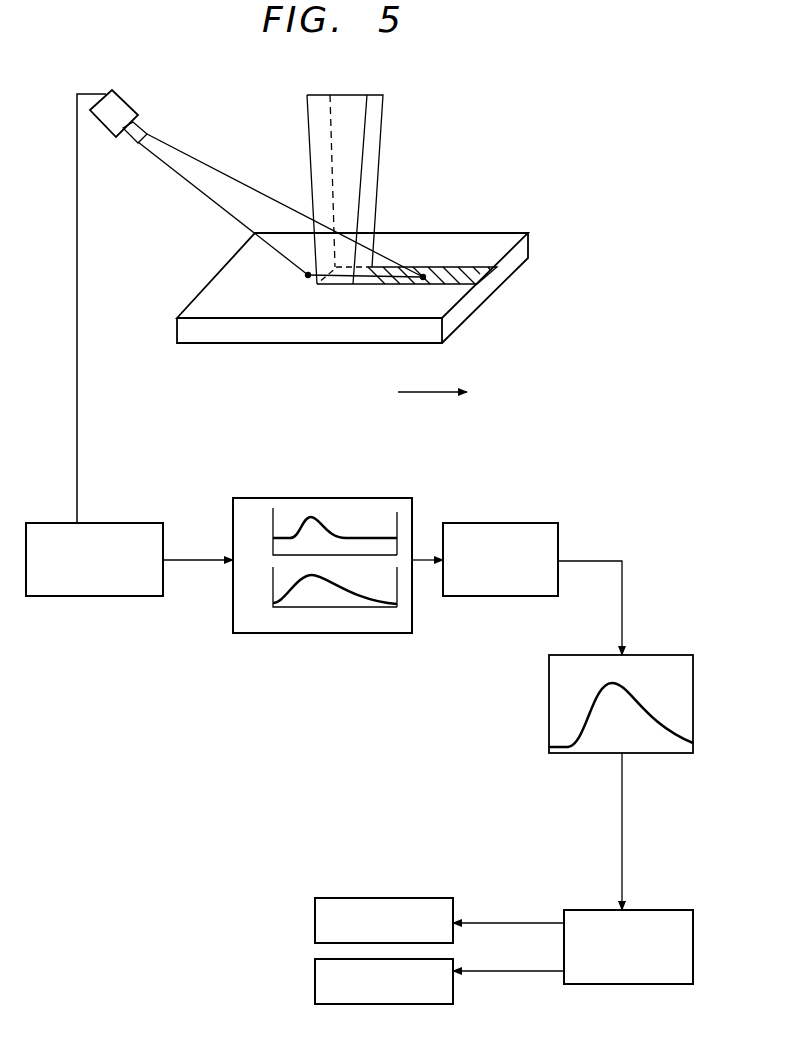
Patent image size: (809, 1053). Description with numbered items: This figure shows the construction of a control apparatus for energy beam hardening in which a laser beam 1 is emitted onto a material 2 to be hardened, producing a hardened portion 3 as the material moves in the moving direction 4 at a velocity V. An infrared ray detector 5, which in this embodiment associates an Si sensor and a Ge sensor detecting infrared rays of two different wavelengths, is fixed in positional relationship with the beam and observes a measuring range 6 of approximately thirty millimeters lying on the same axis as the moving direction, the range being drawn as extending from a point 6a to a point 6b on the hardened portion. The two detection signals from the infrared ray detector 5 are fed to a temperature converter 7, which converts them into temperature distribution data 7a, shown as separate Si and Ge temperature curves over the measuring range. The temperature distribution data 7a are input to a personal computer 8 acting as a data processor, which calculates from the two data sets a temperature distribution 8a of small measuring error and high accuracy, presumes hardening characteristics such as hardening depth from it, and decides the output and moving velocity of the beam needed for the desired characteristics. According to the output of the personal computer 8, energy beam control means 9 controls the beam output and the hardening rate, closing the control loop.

The laser beam 1 is at (384, 118).
The material to be hardened 2 is at (494, 287).
The hardened portion 3 is at (463, 266).
The moving direction 4 is at (427, 394).
The infrared ray detector 5 is at (126, 101).
The measuring range 6 is at (285, 255).
The measurement start point 6a is at (232, 226).
The measurement end point 6b is at (290, 222).
The temperature converter 7 is at (93, 598).
The temperature distribution data 7a is at (316, 497).
The personal computer 8 is at (500, 522).
The temperature distribution 8a is at (693, 690).
The energy beam control means 9 is at (632, 986).